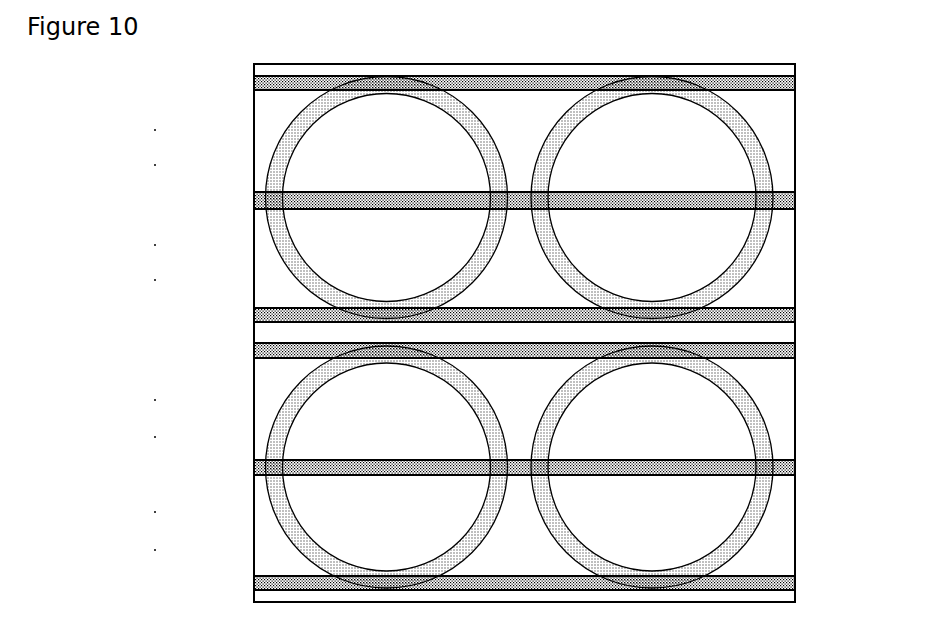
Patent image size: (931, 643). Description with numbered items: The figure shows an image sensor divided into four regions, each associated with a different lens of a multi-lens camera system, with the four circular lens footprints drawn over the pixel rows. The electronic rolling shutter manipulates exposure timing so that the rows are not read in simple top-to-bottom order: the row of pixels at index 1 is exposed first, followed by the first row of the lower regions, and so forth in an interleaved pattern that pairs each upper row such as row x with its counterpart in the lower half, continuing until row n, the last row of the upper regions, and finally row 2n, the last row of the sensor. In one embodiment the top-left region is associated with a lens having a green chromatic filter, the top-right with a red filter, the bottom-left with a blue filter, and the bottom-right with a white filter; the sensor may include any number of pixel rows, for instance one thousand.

The first pixel row index 1 is at (235, 82).
The x-th pixel row index x is at (235, 193).
The n-th pixel row index n is at (235, 311).
The 2n-th pixel row index 2n is at (235, 588).